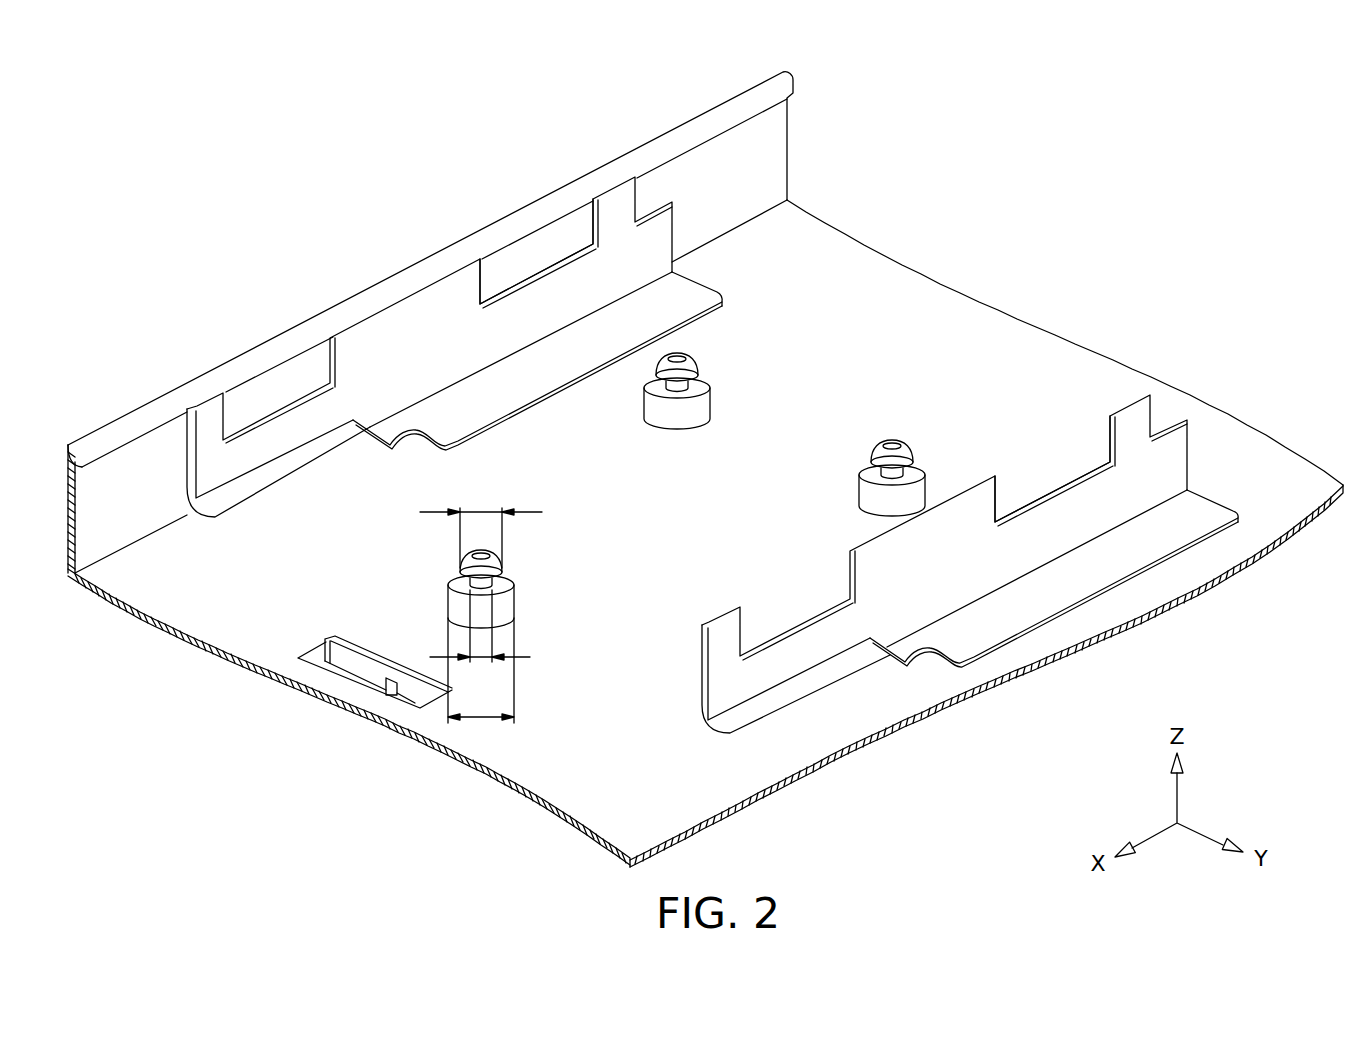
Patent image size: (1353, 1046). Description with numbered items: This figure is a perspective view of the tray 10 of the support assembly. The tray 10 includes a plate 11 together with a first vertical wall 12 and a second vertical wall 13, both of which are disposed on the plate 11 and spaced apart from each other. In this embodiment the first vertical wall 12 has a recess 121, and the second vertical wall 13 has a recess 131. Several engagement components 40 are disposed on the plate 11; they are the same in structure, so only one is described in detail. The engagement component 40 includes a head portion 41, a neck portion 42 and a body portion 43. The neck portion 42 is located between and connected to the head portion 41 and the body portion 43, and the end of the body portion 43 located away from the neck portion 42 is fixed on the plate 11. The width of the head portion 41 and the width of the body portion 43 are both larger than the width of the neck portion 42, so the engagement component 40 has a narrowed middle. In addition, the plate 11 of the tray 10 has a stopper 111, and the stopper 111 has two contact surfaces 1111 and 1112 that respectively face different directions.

The tray 10 is at (135, 375).
The plate 11 is at (220, 605).
The stopper 111 is at (360, 669).
The contact surface 1111 is at (382, 652).
The contact surface 1112 is at (346, 643).
The first vertical wall 12 is at (454, 334).
The recess 121 is at (536, 250).
The second vertical wall 13 is at (970, 554).
The recess 131 is at (1048, 463).
The engagement component 40 is at (672, 535).
The head portion 41 is at (490, 570).
The neck portion 42 is at (487, 587).
The body portion 43 is at (505, 607).